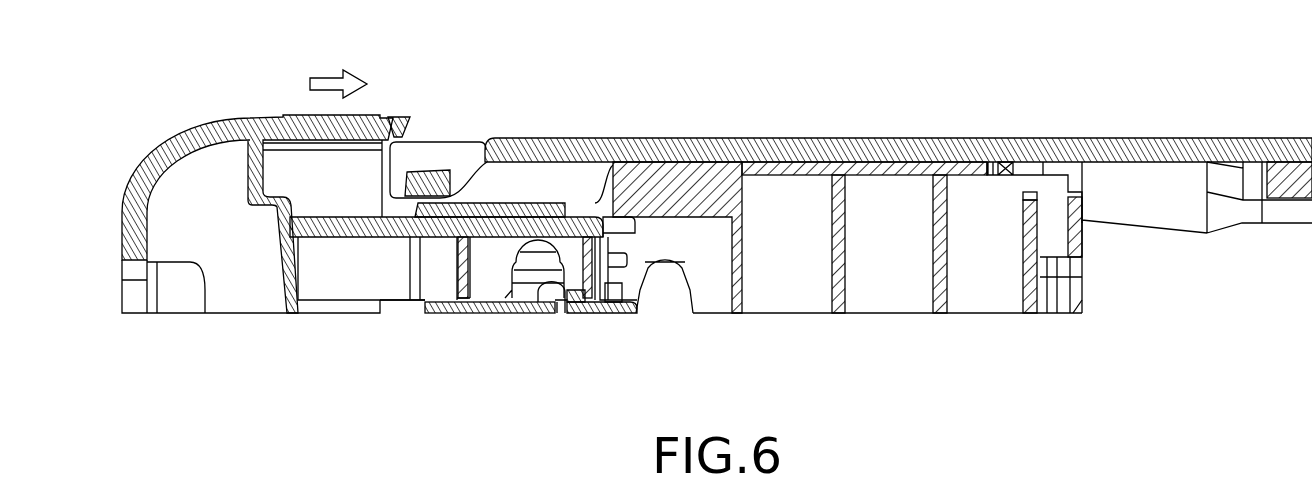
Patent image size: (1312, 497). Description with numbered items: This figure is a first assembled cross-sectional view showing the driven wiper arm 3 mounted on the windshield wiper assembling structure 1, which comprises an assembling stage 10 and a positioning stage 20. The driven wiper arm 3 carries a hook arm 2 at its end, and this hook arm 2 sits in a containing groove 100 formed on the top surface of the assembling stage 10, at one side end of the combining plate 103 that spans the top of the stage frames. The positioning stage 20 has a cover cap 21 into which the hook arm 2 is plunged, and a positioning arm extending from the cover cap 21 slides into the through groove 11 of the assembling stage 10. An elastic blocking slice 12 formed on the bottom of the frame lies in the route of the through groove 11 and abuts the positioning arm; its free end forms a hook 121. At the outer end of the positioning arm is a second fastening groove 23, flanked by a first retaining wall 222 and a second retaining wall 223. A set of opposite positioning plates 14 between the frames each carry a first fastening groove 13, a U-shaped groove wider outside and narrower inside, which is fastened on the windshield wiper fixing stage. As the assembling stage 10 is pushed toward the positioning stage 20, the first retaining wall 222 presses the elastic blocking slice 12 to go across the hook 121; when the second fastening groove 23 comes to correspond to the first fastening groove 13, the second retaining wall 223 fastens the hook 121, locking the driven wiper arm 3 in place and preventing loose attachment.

The windshield wiper assembling structure 1 is at (230, 342).
The positioning stage 20 is at (253, 117).
The cover cap 21 is at (187, 146).
The hook arm 2 is at (432, 172).
The containing groove 100 is at (480, 205).
The second fastening groove 23 is at (538, 250).
The hook 121 is at (532, 300).
The second retaining wall 223 is at (470, 298).
The first retaining wall 222 is at (600, 300).
The through groove 11 is at (410, 268).
The elastic blocking slice 12 is at (455, 305).
The first fastening groove 13 is at (676, 300).
The positioning plate 14 is at (712, 303).
The assembling stage 10 is at (890, 317).
The combining plate 103 is at (795, 138).
The driven wiper arm 3 is at (957, 138).